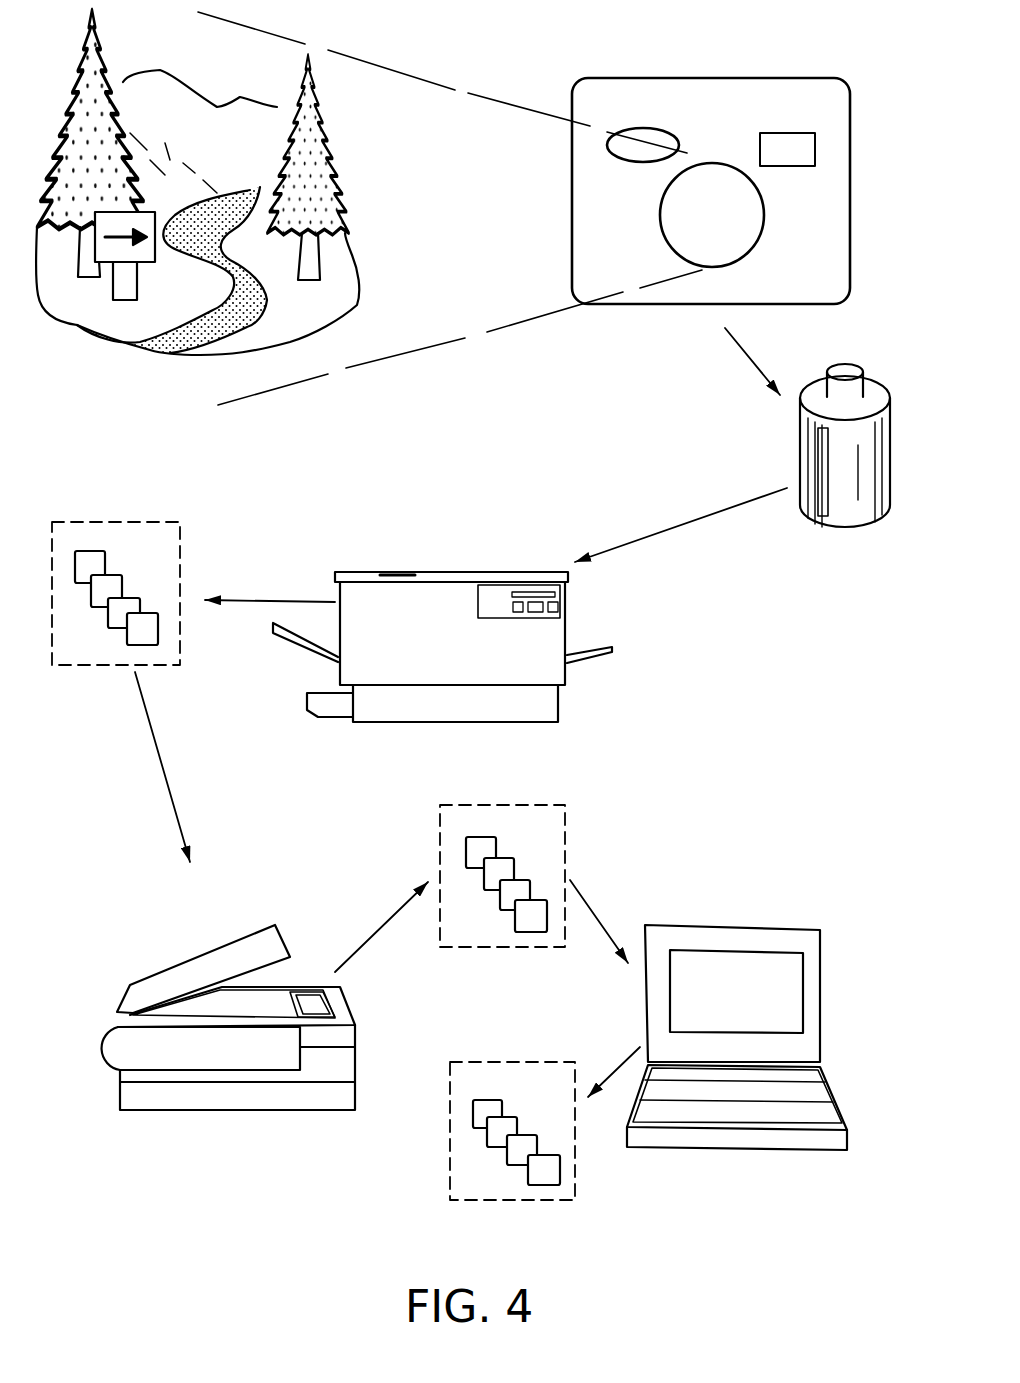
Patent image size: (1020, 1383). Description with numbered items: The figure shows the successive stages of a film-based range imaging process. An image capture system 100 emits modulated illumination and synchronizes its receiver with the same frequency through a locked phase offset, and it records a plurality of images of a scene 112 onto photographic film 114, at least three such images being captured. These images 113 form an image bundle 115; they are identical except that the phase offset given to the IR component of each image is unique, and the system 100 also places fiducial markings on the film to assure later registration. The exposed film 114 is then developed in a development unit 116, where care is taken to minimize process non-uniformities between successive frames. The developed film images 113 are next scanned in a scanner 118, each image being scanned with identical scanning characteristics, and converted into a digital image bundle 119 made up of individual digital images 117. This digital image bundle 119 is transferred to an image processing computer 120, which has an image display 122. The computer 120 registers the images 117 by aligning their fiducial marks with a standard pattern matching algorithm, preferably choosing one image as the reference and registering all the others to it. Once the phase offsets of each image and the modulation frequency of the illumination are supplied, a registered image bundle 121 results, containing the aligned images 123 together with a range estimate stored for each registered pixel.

The image capture system 100 is at (700, 78).
The scene 112 is at (366, 192).
The image 113 is at (67, 680).
The photographic film 114 is at (848, 524).
The image bundle 115 is at (77, 520).
The development unit 116 is at (358, 572).
The image 117 is at (485, 837).
The scanner 118 is at (160, 975).
The digital image bundle 119 is at (440, 812).
The image processing computer 120 is at (722, 925).
The registered image bundle 121 is at (478, 1062).
The image display 122 is at (765, 960).
The image 123 is at (517, 1128).